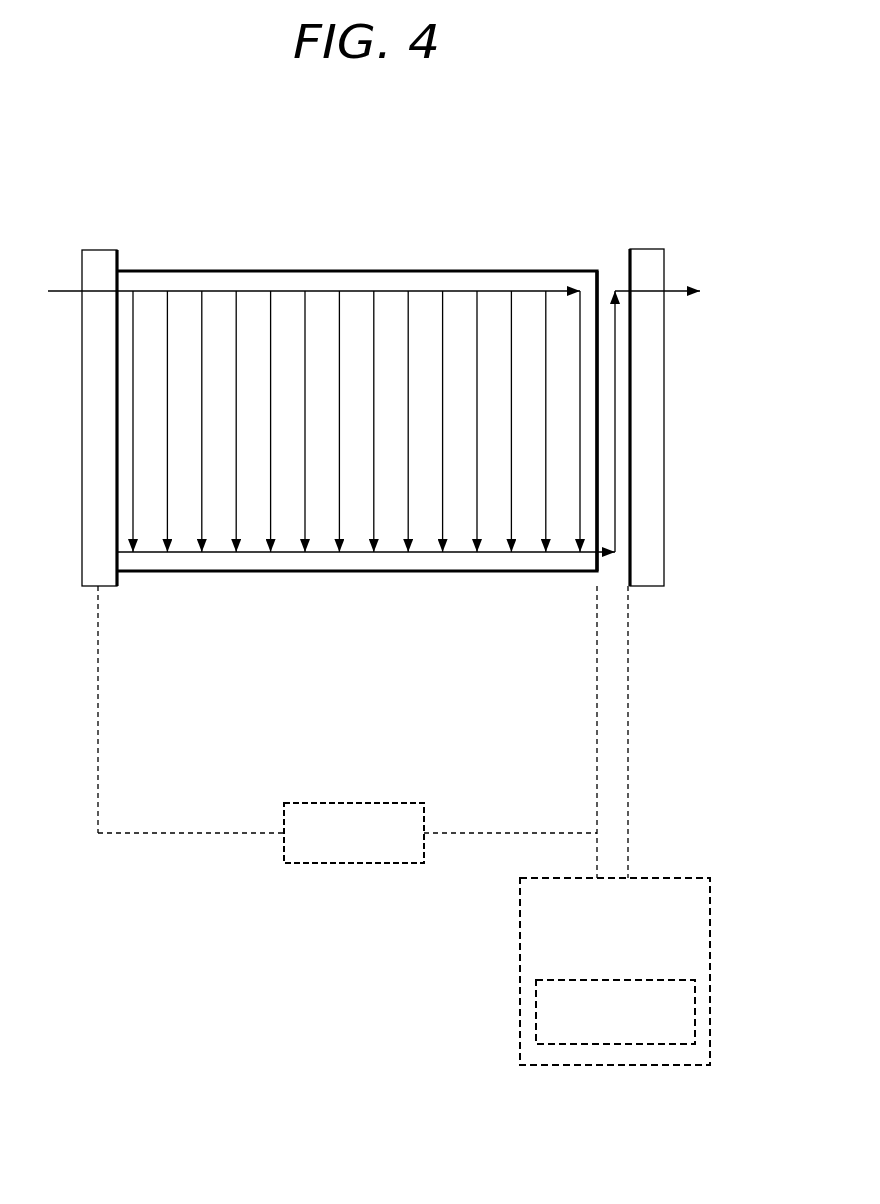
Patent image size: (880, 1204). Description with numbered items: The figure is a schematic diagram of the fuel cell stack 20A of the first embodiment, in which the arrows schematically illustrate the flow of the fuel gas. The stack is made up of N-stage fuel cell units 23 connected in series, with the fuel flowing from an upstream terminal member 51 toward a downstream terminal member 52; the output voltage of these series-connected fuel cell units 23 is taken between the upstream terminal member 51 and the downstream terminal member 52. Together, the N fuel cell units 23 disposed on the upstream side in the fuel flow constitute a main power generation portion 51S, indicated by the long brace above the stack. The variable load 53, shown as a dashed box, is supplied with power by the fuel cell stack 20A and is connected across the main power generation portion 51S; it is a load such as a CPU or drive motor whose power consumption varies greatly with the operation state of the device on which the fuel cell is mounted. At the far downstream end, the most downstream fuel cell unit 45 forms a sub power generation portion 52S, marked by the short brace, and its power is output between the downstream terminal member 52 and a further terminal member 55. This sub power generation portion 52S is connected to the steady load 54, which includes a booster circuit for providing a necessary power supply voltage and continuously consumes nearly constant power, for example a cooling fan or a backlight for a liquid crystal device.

The fuel cell stack 20A is at (464, 172).
The main power generation portion 51S is at (595, 218).
The sub power generation portion 52S is at (630, 218).
The most downstream fuel cell unit 45 is at (620, 390).
The fuel cell unit 23 is at (527, 476).
The upstream terminal member 51 is at (98, 617).
The downstream terminal member 52 is at (597, 628).
The terminal member 55 is at (628, 624).
The variable load 53 is at (403, 864).
The steady load 54 is at (710, 935).